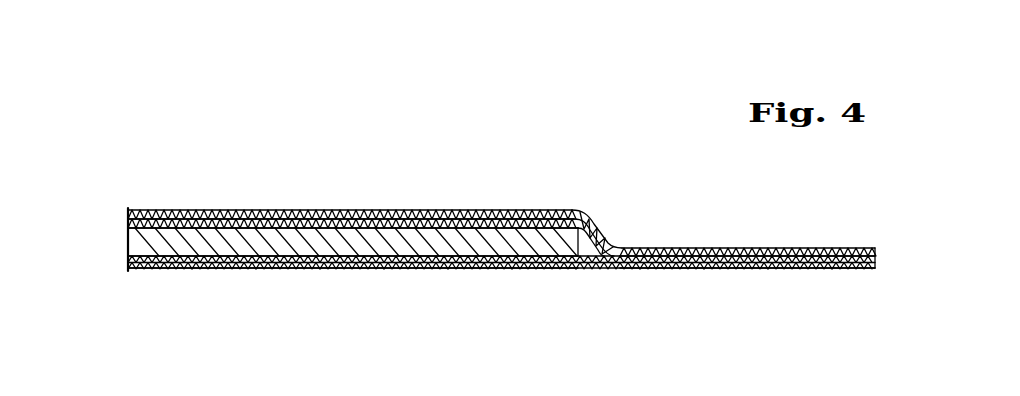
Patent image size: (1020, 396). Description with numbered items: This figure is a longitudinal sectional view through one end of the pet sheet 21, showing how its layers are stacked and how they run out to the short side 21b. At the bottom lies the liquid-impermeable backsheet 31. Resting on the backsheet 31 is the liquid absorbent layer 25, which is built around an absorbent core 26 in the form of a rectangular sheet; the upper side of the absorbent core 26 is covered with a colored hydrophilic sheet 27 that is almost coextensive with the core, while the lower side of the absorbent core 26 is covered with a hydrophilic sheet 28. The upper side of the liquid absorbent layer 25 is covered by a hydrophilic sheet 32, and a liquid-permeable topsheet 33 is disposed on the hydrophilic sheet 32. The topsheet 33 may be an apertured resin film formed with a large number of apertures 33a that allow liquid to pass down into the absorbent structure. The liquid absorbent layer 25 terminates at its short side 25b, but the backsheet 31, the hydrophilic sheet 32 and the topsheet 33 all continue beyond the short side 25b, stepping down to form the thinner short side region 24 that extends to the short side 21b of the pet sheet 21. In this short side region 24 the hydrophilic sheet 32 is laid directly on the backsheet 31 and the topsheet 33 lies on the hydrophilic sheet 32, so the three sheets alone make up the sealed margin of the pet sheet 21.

The pet sheet 21 is at (641, 145).
The short side 21b is at (875, 262).
The short side region 24 is at (732, 233).
The liquid absorbent layer 25 is at (122, 228).
The short side of liquid absorbent layer 25b is at (585, 258).
The absorbent core 26 is at (237, 250).
The colored hydrophilic sheet 27 is at (312, 210).
The hydrophilic sheet 28 is at (316, 272).
The backsheet 31 is at (662, 270).
The hydrophilic sheet 32 is at (638, 248).
The topsheet 33 is at (404, 210).
The apertures 33a is at (470, 210).